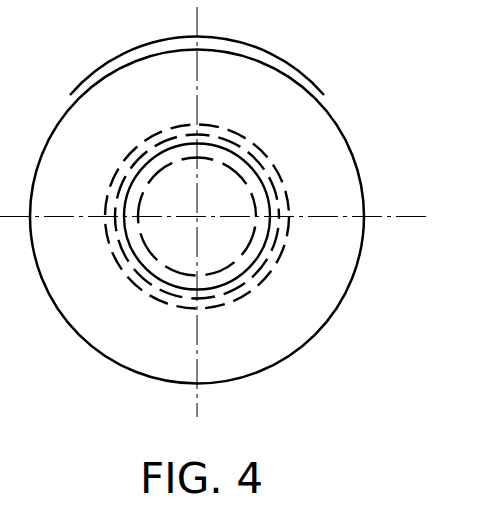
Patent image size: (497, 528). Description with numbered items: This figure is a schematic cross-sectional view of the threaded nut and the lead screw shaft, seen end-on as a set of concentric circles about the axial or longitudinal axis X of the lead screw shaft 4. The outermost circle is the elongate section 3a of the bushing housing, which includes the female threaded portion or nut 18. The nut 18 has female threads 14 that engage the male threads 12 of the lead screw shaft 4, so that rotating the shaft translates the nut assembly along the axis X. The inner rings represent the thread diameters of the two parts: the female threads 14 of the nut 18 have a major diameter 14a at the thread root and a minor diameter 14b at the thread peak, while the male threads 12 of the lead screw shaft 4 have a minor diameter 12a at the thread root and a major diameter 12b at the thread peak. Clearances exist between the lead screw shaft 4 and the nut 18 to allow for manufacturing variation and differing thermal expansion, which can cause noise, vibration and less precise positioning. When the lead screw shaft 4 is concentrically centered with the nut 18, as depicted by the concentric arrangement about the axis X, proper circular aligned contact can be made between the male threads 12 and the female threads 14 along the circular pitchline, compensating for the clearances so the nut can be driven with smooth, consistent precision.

The threaded lead screw shaft 4 is at (226, 264).
The female threaded portion or nut 18 is at (163, 68).
The elongate section 3a is at (237, 68).
The female threads 14 is at (267, 205).
The major diameter of female threads 14a is at (263, 148).
The minor diameter of female threads 14b is at (264, 210).
The male threads 12 is at (295, 221).
The minor diameter of male threads 12a is at (273, 258).
The major diameter of male threads 12b is at (273, 182).
The longitudinal axis X is at (197, 216).